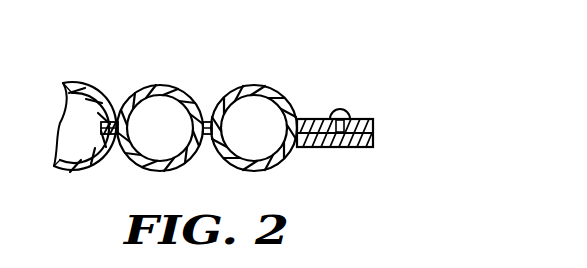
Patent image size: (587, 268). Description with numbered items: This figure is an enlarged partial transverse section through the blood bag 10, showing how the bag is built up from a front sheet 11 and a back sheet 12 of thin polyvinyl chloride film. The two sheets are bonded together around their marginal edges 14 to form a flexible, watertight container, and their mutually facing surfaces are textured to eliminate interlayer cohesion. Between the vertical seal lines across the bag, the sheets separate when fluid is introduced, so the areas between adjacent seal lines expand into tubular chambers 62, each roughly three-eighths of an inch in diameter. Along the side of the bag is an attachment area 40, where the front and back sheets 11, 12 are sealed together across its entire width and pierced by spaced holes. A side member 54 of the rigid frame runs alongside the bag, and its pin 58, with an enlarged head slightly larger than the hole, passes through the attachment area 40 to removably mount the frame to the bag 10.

The blood bag 10 is at (341, 56).
The front sheet 11 is at (133, 95).
The back sheet 12 is at (175, 170).
The marginal edges 14 is at (374, 127).
The attachment areas 40 is at (308, 117).
The side members 54 is at (329, 148).
The pins 58 is at (342, 115).
The tubular chambers 62 is at (241, 127).